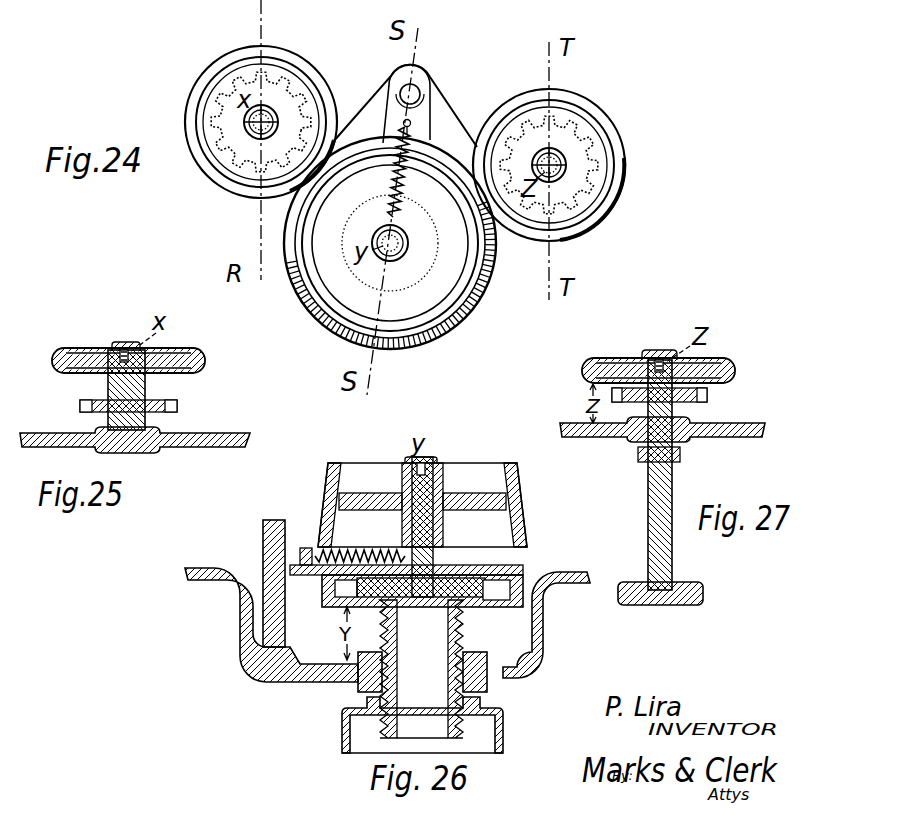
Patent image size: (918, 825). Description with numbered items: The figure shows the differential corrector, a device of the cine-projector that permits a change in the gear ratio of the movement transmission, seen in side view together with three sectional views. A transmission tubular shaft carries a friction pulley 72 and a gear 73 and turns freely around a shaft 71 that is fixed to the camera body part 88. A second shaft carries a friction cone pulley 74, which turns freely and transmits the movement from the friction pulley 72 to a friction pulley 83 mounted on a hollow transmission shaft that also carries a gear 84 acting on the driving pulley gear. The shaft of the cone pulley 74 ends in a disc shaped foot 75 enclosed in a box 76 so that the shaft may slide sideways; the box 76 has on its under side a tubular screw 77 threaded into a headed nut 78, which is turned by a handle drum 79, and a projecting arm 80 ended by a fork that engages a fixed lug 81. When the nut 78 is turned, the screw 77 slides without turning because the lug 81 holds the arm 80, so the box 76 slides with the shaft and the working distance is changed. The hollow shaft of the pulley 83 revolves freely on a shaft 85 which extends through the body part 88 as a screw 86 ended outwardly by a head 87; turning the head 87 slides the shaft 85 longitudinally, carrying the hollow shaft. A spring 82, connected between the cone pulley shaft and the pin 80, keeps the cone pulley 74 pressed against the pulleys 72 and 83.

In FIG. 24, the shaft 71 is at (196, 115).
In FIG. 25, the shaft 71 is at (126, 370).
In FIG. 24, the friction pulley 72 is at (204, 73).
In FIG. 25, the friction pulley 72 is at (146, 361).
In FIG. 24, the gear 73 is at (232, 85).
In FIG. 25, the gear 73 is at (145, 406).
In FIG. 24, the friction cone pulley 74 is at (390, 243).
In FIG. 26, the friction cone pulley 74 is at (435, 502).
In FIG. 26, the disc shaped foot 75 is at (335, 603).
In FIG. 26, the box 76 is at (496, 605).
In FIG. 26, the tubular screw 77 is at (421, 669).
In FIG. 26, the headed nut 78 is at (490, 688).
In FIG. 26, the handle drum 79 is at (505, 741).
In FIG. 24, the projecting arm 80 is at (397, 121).
In FIG. 26, the projecting arm 80 is at (310, 578).
In FIG. 24, the fixed lug 81 is at (425, 88).
In FIG. 26, the fixed lug 81 is at (278, 569).
In FIG. 24, the spring 82 is at (406, 187).
In FIG. 26, the spring 82 is at (360, 541).
In FIG. 24, the friction pulley 83 is at (566, 165).
In FIG. 27, the friction pulley 83 is at (674, 371).
In FIG. 24, the gear 84 is at (612, 133).
In FIG. 27, the gear 84 is at (676, 401).
In FIG. 24, the shaft 85 is at (566, 140).
In FIG. 27, the shaft 85 is at (653, 348).
In FIG. 27, the screw 86 is at (682, 450).
In FIG. 27, the head 87 is at (679, 597).
In FIG. 25, the camera body part 88 is at (150, 440).
In FIG. 27, the camera body part 88 is at (678, 428).
In FIG. 26, the camera body part 88 is at (368, 622).